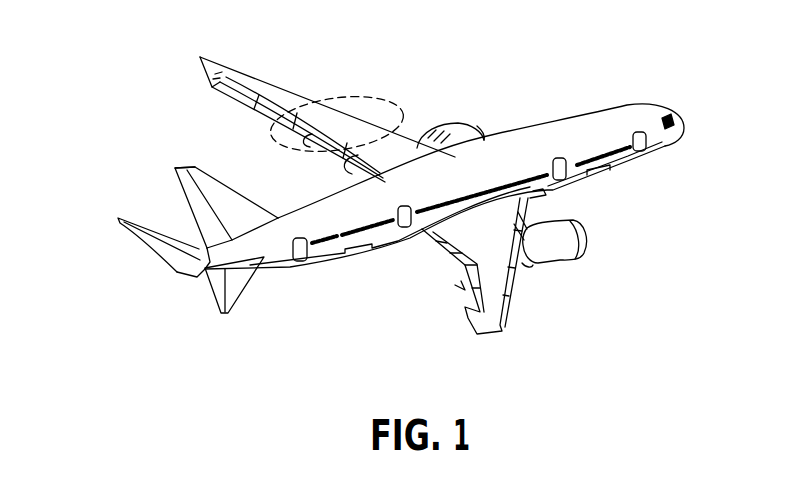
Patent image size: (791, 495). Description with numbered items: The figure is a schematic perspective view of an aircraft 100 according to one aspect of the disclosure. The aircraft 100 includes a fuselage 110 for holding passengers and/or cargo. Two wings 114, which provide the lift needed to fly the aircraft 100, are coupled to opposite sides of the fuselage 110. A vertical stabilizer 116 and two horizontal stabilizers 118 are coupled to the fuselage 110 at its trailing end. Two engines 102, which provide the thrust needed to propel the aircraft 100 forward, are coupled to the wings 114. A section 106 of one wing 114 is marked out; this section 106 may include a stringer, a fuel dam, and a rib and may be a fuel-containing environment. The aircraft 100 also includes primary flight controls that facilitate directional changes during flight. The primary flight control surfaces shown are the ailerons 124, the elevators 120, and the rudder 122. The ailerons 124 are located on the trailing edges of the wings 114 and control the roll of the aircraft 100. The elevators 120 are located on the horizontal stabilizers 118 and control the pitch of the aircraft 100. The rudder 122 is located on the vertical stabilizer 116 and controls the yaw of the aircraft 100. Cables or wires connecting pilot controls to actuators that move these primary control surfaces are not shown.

The aircraft 100 is at (453, 80).
The engines 102 is at (480, 128).
The section 106 is at (337, 97).
The fuselage 110 is at (588, 130).
The wings 114 is at (409, 140).
The vertical stabilizer 116 is at (227, 183).
The horizontal stabilizers 118 is at (153, 211).
The elevators 120 is at (142, 238).
The rudder 122 is at (170, 172).
The ailerons 124 is at (210, 93).